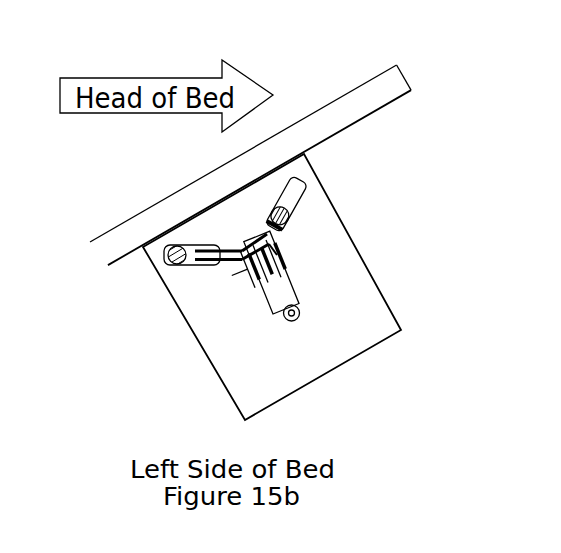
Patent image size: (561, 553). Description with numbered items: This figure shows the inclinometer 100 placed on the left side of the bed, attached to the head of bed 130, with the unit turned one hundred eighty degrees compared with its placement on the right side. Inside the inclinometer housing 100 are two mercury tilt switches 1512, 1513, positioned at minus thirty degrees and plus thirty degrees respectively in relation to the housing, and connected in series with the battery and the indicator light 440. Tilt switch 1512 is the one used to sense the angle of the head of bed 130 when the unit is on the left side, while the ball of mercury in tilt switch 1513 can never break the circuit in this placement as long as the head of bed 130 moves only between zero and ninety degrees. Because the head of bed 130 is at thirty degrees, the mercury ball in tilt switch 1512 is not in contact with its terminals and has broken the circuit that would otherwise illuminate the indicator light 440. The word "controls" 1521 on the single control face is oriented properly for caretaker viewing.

The head of bed 130 is at (113, 242).
The inclinometer 100 is at (218, 352).
The word "controls" 1521 is at (345, 352).
The tilt switch 1512 is at (196, 246).
The tilt switch 1513 is at (302, 188).
The indicator light 440 is at (275, 321).